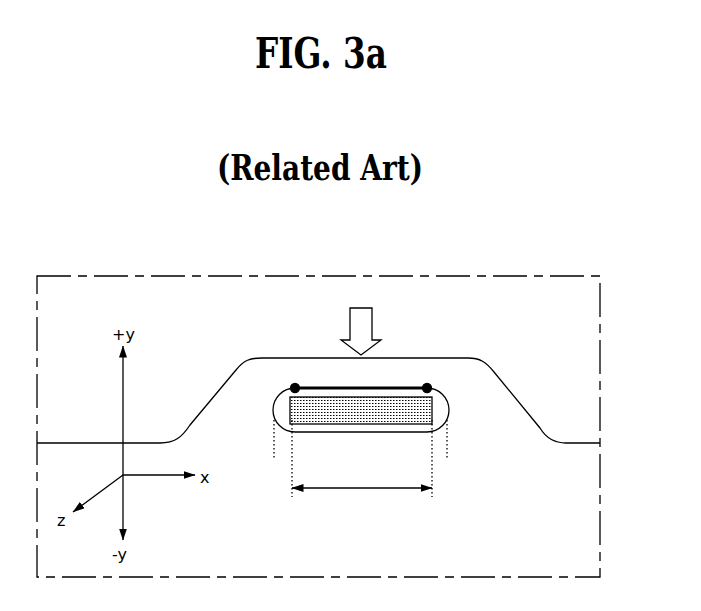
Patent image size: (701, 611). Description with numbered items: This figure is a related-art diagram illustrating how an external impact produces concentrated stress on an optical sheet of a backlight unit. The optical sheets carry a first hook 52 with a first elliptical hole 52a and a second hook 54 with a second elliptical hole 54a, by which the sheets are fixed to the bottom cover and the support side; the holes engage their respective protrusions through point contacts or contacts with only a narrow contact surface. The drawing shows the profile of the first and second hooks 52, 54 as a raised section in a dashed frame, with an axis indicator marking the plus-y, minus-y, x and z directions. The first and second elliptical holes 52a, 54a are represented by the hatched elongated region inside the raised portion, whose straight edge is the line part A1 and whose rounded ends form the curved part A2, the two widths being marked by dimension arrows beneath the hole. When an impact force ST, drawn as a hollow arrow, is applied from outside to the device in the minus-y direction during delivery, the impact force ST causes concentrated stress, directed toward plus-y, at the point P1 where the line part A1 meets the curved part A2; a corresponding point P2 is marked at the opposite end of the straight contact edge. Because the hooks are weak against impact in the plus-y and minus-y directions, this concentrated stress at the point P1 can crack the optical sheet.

The first hook 52 is at (318, 400).
The second hook 54 is at (493, 403).
The first elliptical hole 52a is at (410, 382).
The second elliptical hole 54a is at (438, 412).
The point P1 is at (292, 383).
The second contact point P2 is at (431, 383).
The impact force ST is at (361, 320).
The line part A1 is at (362, 498).
The curved part A2 is at (317, 450).